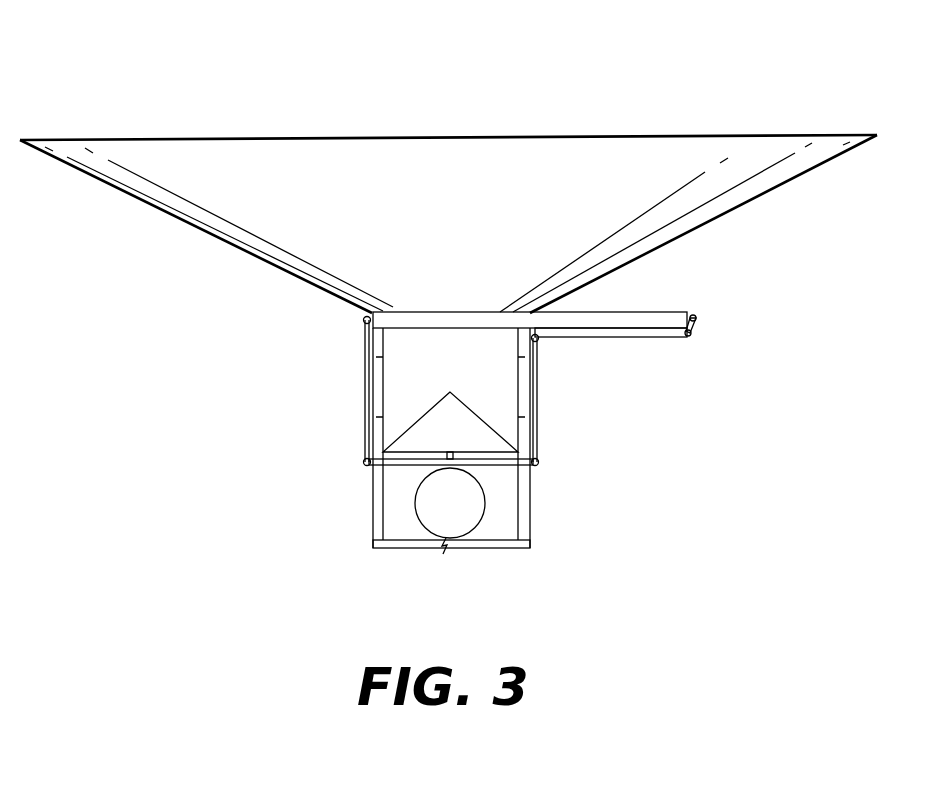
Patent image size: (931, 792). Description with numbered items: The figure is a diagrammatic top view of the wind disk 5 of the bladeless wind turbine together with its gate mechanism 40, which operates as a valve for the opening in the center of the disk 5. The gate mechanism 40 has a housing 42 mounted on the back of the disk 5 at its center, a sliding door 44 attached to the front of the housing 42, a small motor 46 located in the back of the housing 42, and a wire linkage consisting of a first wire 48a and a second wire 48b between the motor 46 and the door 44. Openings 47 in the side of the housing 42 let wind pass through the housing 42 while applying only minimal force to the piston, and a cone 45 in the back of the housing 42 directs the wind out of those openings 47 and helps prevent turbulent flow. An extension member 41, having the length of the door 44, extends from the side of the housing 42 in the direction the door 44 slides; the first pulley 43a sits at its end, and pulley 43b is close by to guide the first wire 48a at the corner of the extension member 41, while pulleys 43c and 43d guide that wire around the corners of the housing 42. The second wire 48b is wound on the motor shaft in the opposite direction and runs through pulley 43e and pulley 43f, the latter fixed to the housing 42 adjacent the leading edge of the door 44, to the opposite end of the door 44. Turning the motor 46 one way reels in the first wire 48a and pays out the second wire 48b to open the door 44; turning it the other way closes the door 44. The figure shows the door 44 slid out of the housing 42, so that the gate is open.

The disk 5 is at (460, 137).
The gate mechanism 40 is at (679, 457).
The extension member 41 is at (695, 330).
The housing 42 is at (530, 527).
The first pulley 43a is at (698, 316).
The pulley 43b is at (690, 336).
The pulley 43c is at (538, 338).
The pulley 43d is at (537, 462).
The pulley 43e is at (365, 463).
The pulley 43f is at (363, 318).
The sliding door 44 is at (668, 312).
The cone 45 is at (413, 424).
The motor 46 is at (462, 522).
The openings 47 is at (343, 385).
The first wire 48a is at (665, 338).
The second wire 48b is at (365, 330).